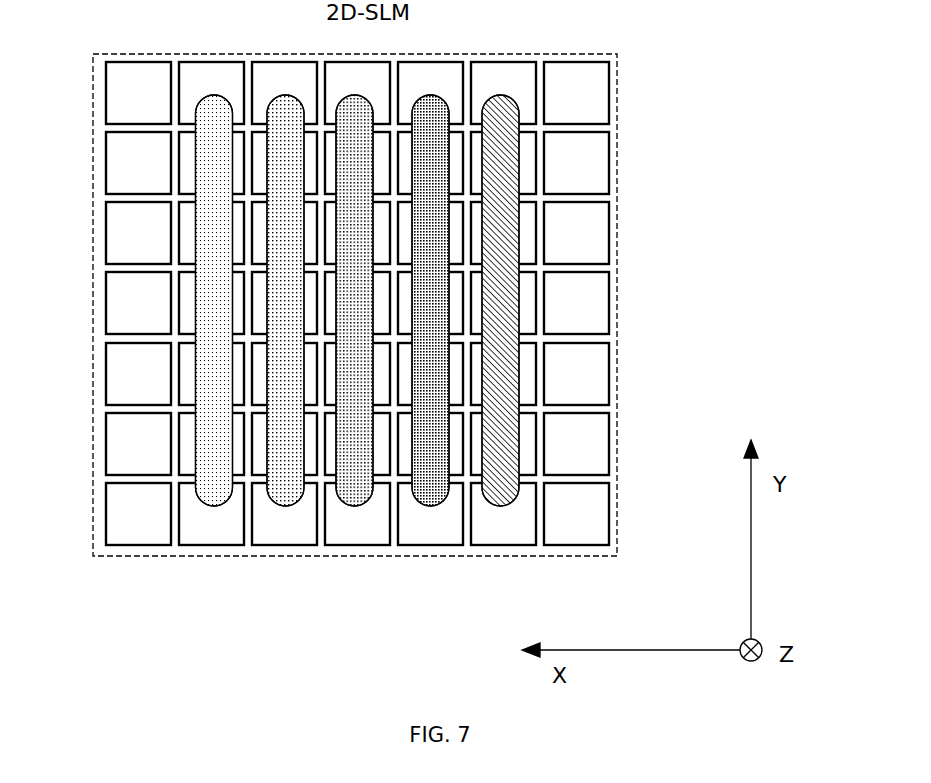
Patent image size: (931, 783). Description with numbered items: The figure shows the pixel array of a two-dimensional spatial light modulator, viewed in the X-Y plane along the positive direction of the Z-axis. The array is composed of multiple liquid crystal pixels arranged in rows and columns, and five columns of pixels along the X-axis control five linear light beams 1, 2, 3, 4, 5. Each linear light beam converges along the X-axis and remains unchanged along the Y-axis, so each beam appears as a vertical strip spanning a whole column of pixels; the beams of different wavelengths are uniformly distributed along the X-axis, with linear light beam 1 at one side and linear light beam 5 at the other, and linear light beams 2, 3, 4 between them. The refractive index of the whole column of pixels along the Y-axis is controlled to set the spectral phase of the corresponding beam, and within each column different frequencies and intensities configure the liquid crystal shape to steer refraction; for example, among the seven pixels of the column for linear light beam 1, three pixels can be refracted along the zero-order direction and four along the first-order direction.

The linear light beam 1 is at (500, 318).
The linear light beam 2 is at (430, 318).
The linear light beam 3 is at (354, 318).
The linear light beam 4 is at (285, 318).
The linear light beam 5 is at (214, 318).